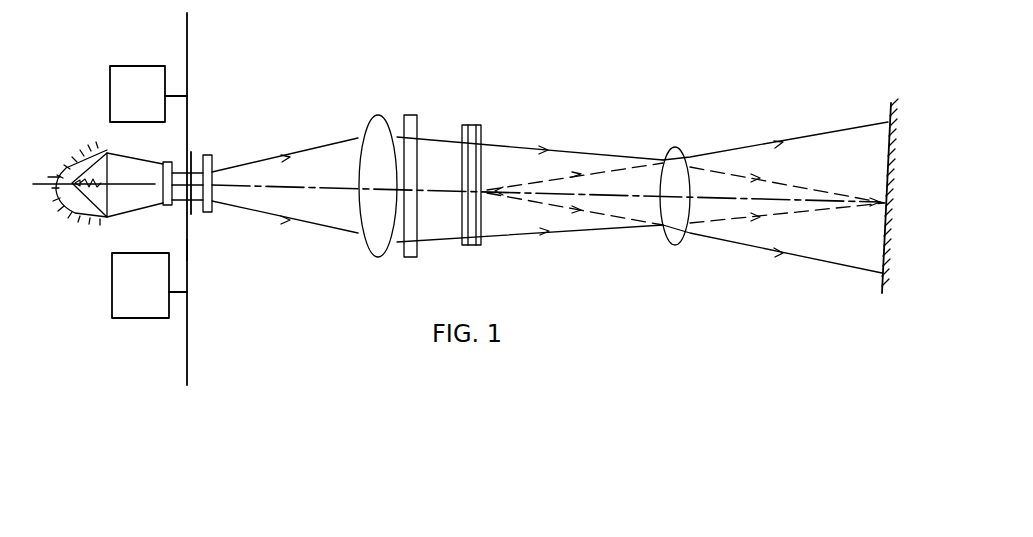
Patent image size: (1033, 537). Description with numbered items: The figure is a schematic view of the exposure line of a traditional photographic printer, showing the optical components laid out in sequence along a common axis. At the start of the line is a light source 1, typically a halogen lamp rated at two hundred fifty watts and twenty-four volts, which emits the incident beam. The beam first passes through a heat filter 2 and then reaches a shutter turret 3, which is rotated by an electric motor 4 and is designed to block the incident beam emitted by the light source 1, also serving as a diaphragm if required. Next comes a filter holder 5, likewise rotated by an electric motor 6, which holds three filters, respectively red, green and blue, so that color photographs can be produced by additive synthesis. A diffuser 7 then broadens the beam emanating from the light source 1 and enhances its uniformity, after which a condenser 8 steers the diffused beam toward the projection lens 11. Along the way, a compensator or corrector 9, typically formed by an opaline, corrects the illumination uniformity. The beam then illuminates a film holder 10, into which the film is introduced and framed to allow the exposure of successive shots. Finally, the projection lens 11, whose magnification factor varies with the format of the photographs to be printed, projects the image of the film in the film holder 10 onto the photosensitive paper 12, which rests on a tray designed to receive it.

The light source 1 is at (68, 143).
The heat filter 2 is at (159, 151).
The shutter turret 3 is at (188, 66).
The electric motor 4 is at (143, 84).
The filter holder 5 is at (189, 249).
The electric motor 6 is at (139, 297).
The diffuser 7 is at (207, 154).
The condenser 8 is at (380, 127).
The compensator or corrector 9 is at (411, 114).
The film holder 10 is at (464, 124).
The projection lens 11 is at (672, 149).
The photosensitive paper 12 is at (888, 113).